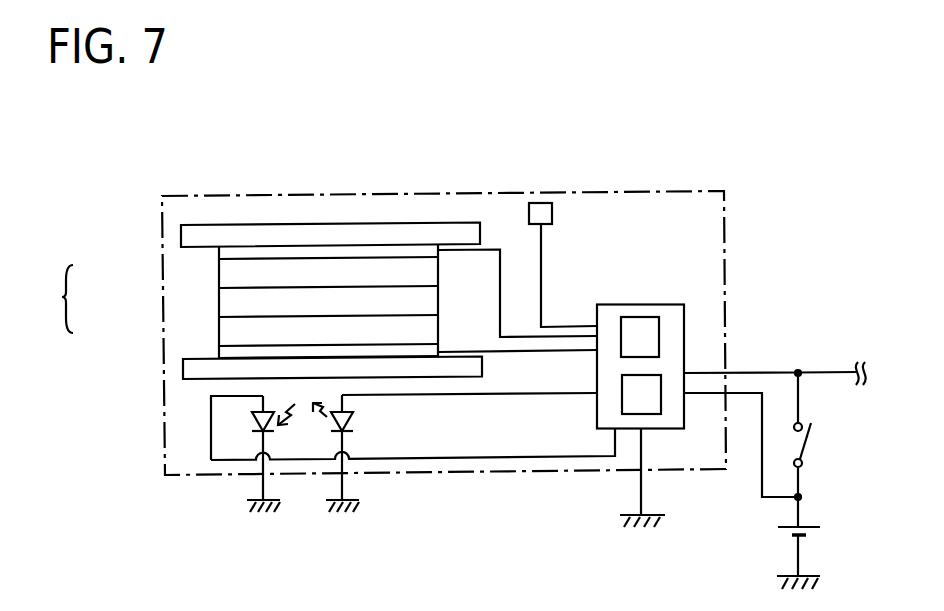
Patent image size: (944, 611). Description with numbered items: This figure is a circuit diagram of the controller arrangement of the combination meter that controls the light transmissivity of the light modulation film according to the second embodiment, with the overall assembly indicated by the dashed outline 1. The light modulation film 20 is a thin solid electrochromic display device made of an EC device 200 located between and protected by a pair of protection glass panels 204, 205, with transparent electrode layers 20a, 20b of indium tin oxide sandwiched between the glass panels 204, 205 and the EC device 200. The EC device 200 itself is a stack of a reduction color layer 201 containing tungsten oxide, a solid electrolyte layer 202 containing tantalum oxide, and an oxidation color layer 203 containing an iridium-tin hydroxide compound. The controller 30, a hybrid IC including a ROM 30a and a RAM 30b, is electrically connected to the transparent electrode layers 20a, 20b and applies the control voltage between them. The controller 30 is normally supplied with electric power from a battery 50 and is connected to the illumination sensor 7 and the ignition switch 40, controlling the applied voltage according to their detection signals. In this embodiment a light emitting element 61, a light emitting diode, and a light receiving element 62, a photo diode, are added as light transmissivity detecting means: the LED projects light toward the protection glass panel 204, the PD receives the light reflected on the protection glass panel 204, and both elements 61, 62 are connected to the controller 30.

The piezoelectric device 1 is at (181, 194).
The light modulation film 20 is at (348, 225).
The transparent electrode layer 20a is at (219, 253).
The transparent electrode layer 20b is at (219, 353).
The EC device 200 is at (230, 301).
The reduction color layer 201 is at (219, 276).
The solid electrolyte layer 202 is at (219, 304).
The oxidation color layer 203 is at (219, 333).
The protection glass panel 204 is at (181, 236).
The protection glass panel 205 is at (183, 368).
The illumination sensor 7 is at (542, 203).
The controller 30 is at (630, 304).
The ROM 30a is at (661, 379).
The RAM 30b is at (659, 327).
The ignition switch 40 is at (805, 446).
The battery 50 is at (808, 527).
The light emitting element 61 is at (346, 432).
The light receiving element 62 is at (267, 432).